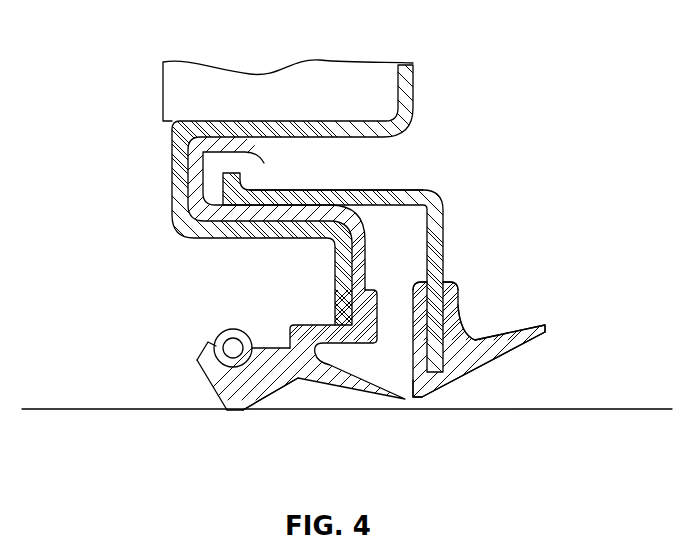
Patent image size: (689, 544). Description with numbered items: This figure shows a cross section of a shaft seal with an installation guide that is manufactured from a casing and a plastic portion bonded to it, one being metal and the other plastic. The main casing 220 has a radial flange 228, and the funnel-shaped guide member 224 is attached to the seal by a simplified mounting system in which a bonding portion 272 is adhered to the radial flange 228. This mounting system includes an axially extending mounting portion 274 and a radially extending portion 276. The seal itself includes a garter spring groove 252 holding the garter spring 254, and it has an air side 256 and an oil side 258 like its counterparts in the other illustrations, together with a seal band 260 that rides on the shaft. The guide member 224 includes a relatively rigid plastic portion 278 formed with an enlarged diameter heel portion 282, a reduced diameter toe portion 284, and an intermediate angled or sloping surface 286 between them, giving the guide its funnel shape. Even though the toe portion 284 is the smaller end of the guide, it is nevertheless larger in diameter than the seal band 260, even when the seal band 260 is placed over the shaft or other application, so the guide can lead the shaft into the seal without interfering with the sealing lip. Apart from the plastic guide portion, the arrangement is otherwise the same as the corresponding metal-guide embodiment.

The main casing 220 is at (390, 162).
The guide member 224 is at (456, 215).
The radial flange 228 is at (358, 278).
The garter spring groove 252 is at (215, 338).
The garter spring 254 is at (207, 357).
The air side 256 is at (285, 382).
The oil side 258 is at (212, 392).
The seal band 260 is at (224, 410).
The bonding portion 272 is at (342, 307).
The axially extending mounting portion 274 is at (320, 197).
The radially extending portion 276 is at (438, 281).
The relatively rigid plastic portion 278 is at (452, 313).
The enlarged diameter heel portion 282 is at (546, 328).
The reduced diameter toe portion 284 is at (428, 398).
The intermediate angled or sloping surface 286 is at (497, 363).